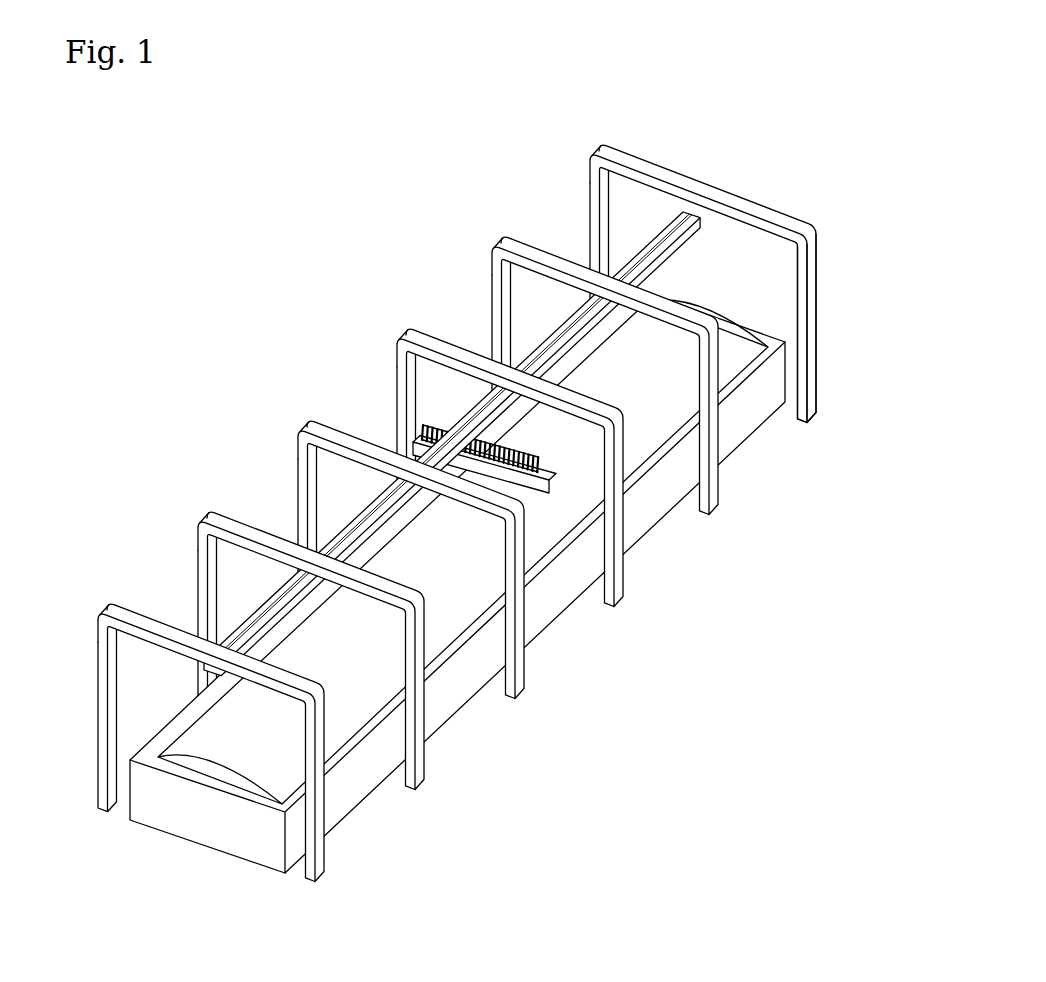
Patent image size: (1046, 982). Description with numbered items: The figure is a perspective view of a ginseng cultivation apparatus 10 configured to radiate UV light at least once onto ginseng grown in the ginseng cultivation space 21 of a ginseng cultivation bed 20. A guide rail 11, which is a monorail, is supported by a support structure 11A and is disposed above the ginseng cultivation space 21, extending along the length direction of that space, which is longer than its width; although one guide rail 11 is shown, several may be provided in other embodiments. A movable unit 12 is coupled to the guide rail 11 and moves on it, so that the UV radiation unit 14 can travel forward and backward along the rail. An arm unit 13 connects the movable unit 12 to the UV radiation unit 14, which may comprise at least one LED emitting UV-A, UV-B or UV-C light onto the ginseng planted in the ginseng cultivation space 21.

The transfer apparatus 10 is at (488, 529).
The guide rail 11 is at (741, 273).
The support structure 11A is at (818, 343).
The movable unit 12 is at (477, 400).
The arm unit 13 is at (482, 428).
The UV radiation unit 14 is at (551, 485).
The ginseng cultivation bed 20 is at (212, 818).
The ginseng cultivation space 21 is at (198, 742).